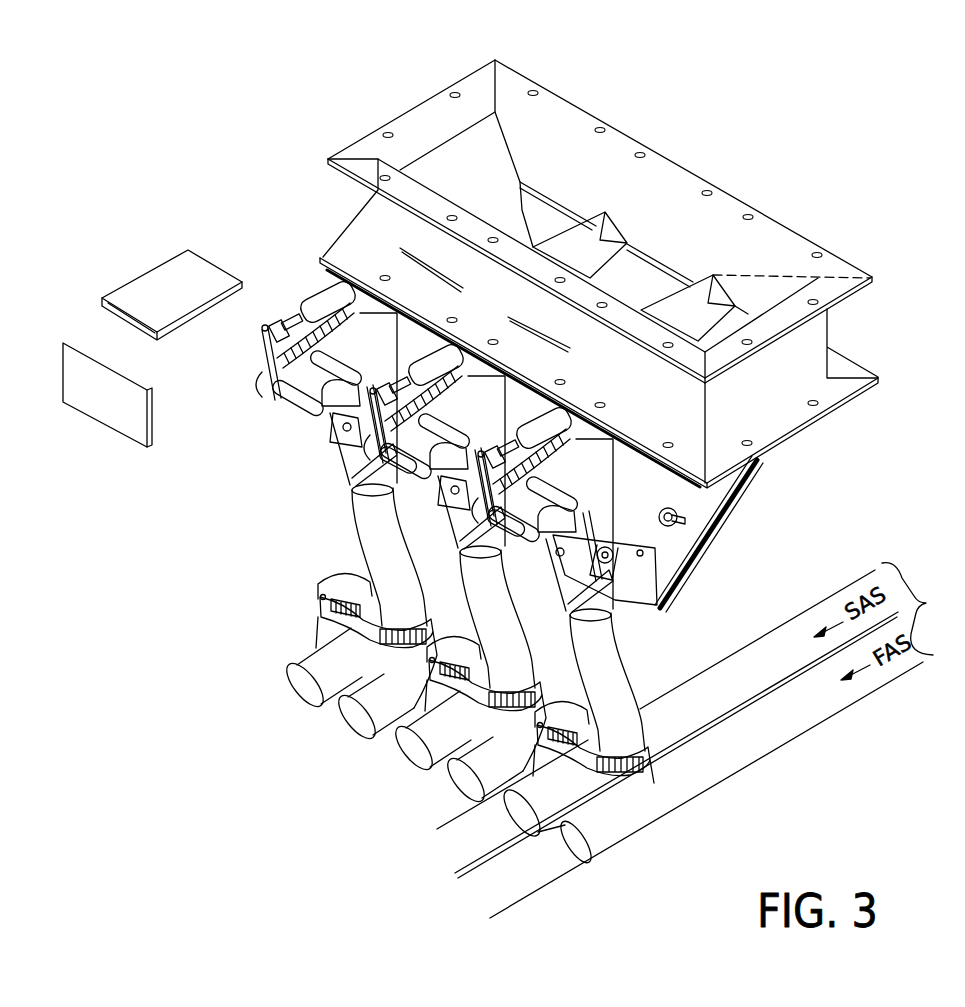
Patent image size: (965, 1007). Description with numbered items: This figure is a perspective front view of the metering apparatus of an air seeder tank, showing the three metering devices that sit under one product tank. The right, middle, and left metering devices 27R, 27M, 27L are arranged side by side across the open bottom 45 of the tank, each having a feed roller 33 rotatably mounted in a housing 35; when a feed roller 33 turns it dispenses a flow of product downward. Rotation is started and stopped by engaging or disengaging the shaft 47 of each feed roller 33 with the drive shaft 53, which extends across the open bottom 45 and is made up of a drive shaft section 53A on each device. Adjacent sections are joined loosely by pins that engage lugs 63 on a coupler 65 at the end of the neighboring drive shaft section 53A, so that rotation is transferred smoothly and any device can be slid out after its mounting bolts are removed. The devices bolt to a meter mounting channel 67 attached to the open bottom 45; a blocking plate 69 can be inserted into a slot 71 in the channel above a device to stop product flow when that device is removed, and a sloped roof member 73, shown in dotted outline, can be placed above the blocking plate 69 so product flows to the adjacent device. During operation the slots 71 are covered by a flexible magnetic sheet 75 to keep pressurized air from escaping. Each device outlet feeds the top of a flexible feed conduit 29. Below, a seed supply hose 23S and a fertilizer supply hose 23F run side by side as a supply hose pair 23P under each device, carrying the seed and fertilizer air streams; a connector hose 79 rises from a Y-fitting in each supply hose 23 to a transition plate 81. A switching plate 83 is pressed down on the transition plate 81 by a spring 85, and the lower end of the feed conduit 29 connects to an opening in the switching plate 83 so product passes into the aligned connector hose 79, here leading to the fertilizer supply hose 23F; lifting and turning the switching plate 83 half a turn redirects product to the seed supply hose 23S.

The supply hose 23 is at (680, 747).
The seed supply hose 23S is at (773, 690).
The fertilizer supply hose 23F is at (747, 770).
The supply hose pair 23P is at (923, 609).
The right metering device 27R is at (366, 380).
The middle metering device 27M is at (517, 415).
The left metering device 27L is at (633, 519).
The flexible feed conduit 29 is at (630, 683).
The feed roller 33 is at (303, 420).
The housing 35 is at (383, 357).
The open bottom 45 is at (610, 178).
The shaft 47 is at (680, 525).
The drive shaft 53 is at (643, 577).
The drive shaft section 53A is at (323, 422).
The lugs 63 is at (667, 613).
The coupler 65 is at (653, 545).
The meter mounting channel 67 is at (880, 272).
The blocking plate 69 is at (168, 258).
The slot 71 is at (423, 257).
The sloped roof member 73 is at (777, 275).
The flexible magnetic sheet 75 is at (90, 420).
The connector hose 79 is at (606, 806).
The transition plate 81 is at (652, 774).
The switching plate 83 is at (592, 707).
The spring 85 is at (418, 753).